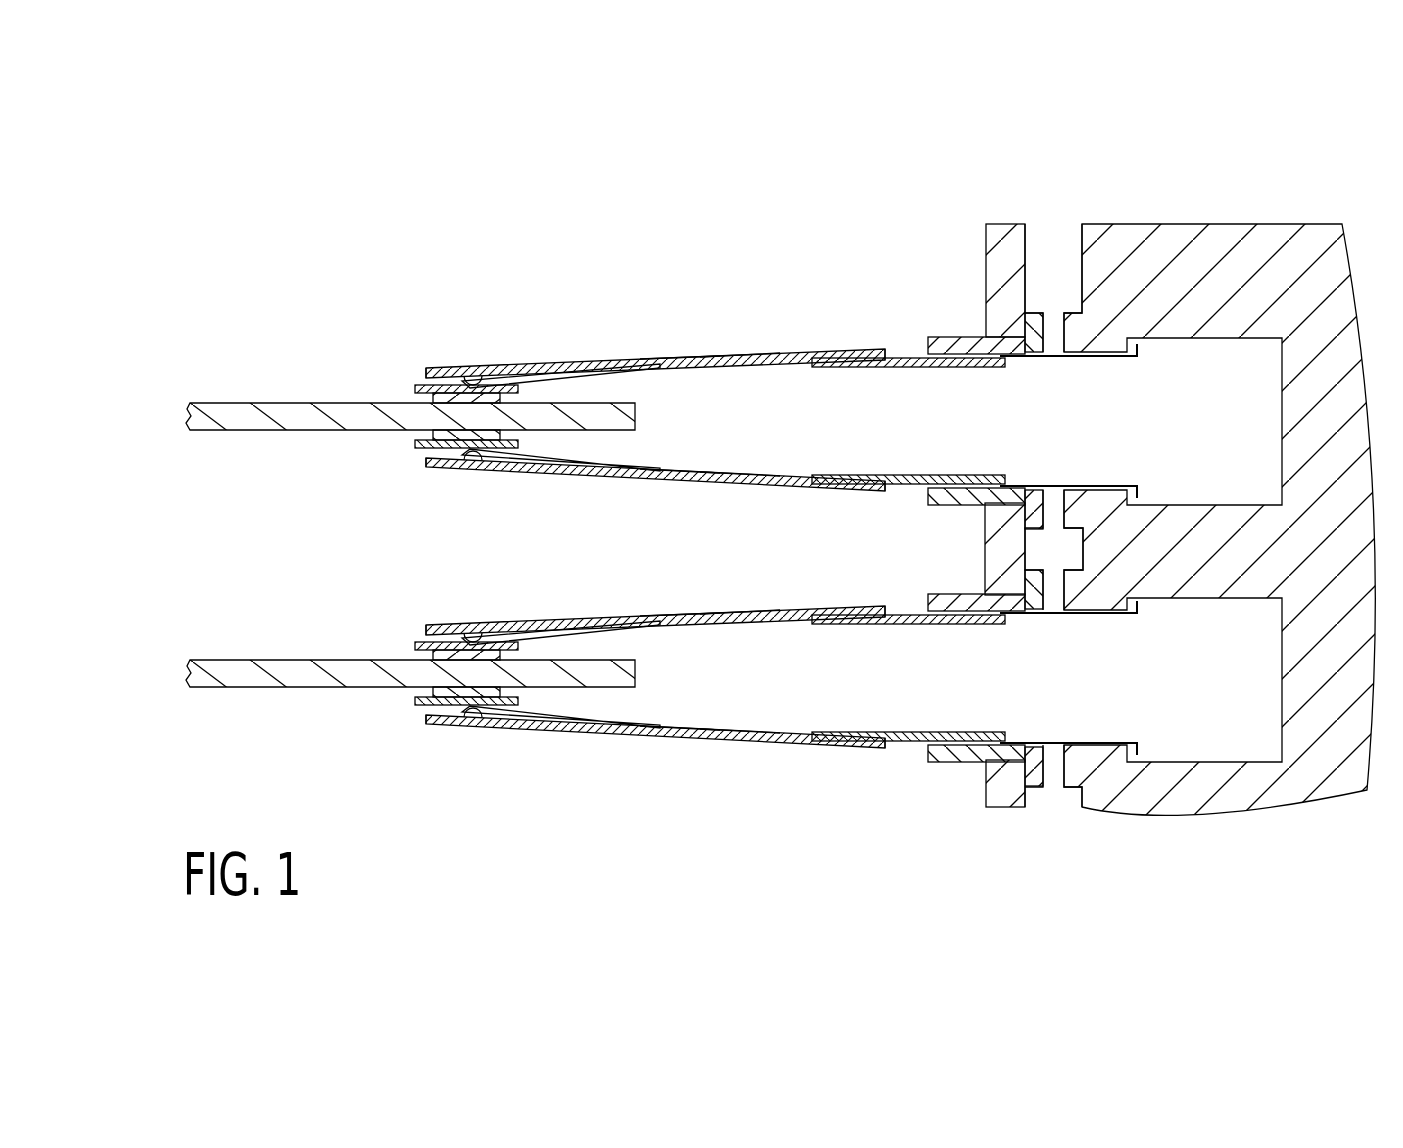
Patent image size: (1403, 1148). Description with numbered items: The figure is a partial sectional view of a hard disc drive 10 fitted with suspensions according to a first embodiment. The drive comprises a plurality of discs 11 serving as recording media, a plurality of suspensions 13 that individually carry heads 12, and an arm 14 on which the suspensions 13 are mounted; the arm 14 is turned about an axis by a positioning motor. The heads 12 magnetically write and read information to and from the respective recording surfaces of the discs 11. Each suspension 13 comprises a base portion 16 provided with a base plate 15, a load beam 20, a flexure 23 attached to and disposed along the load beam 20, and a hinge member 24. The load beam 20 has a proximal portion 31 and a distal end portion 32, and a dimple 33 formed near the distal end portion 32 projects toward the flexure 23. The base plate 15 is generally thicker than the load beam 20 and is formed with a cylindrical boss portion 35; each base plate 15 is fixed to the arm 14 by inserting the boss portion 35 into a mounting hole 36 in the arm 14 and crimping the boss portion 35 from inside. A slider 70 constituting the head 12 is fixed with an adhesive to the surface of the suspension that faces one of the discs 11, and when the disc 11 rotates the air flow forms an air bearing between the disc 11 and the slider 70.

The hard disc drive 10 is at (1245, 163).
The disc 11 is at (250, 410).
The head 12 is at (397, 371).
The suspension 13 is at (681, 348).
The arm 14 is at (1185, 226).
The base plate 15 is at (960, 338).
The base portion 16 is at (1083, 362).
The load beam 20 is at (589, 362).
The flexure 23 is at (722, 366).
The hinge member 24 is at (907, 368).
The proximal portion 31 is at (864, 349).
The distal end portion 32 is at (445, 383).
The dimple 33 is at (474, 376).
The boss portion 35 is at (1033, 356).
The mounting hole 36 is at (1078, 240).
The slider 70 is at (433, 397).